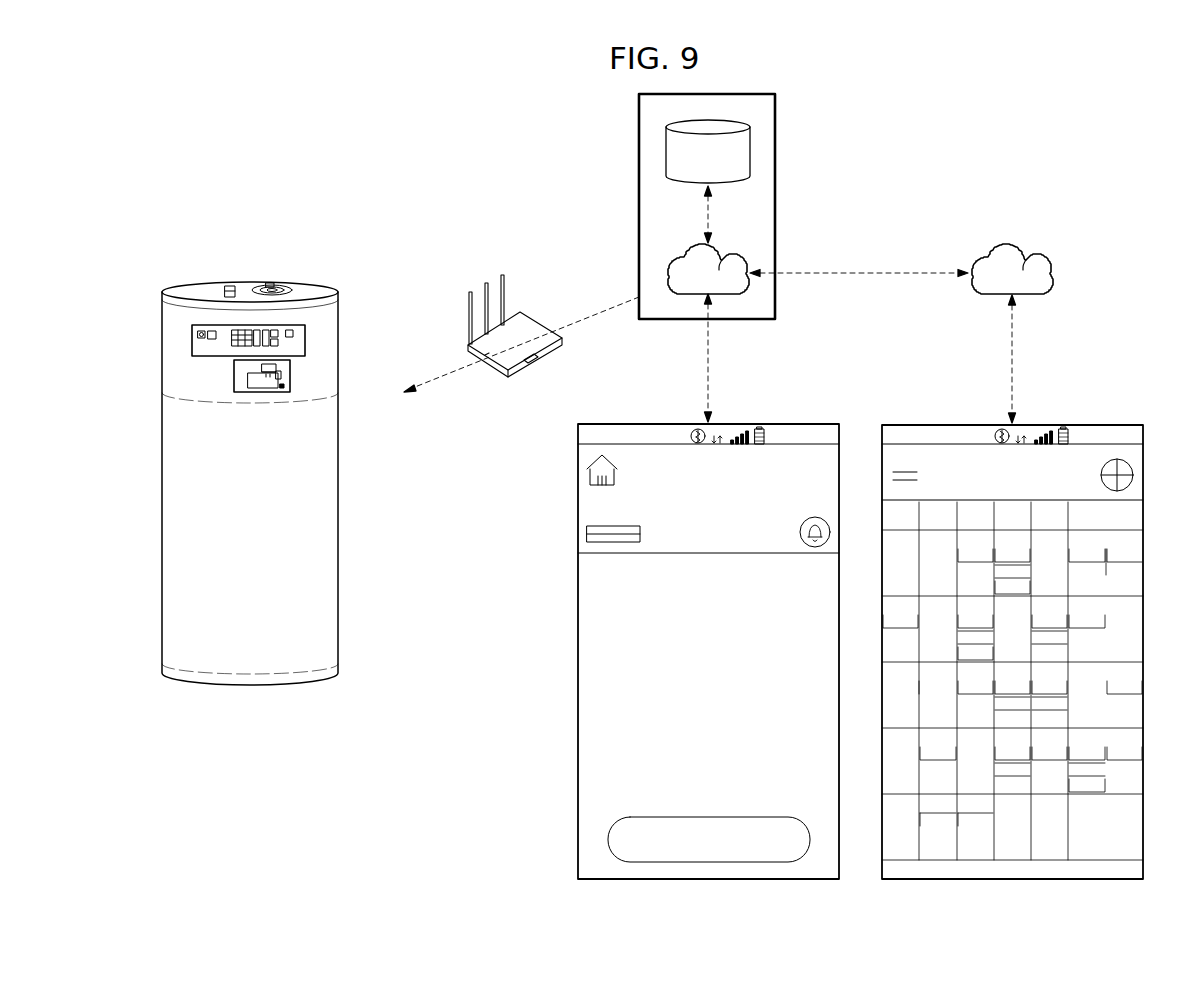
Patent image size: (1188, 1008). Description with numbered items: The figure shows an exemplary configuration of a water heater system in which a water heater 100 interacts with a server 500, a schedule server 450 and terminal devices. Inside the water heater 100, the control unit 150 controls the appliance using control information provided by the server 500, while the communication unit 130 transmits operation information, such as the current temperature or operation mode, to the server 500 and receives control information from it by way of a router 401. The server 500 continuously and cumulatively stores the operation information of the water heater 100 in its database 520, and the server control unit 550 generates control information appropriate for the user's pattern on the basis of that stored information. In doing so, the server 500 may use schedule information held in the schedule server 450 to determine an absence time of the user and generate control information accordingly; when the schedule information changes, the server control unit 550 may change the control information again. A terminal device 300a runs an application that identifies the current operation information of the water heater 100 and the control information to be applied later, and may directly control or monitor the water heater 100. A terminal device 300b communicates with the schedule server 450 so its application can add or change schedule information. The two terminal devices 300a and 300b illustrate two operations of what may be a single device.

The water heater 100 is at (223, 265).
The communication unit 130 is at (290, 376).
The control unit 150 is at (305, 341).
The router 401 is at (535, 364).
The schedule server 450 is at (1012, 244).
The server 500 is at (639, 207).
The database 520 is at (750, 154).
The server control unit 550 is at (747, 262).
The terminal device 300a is at (772, 424).
The terminal device 300b is at (1075, 425).